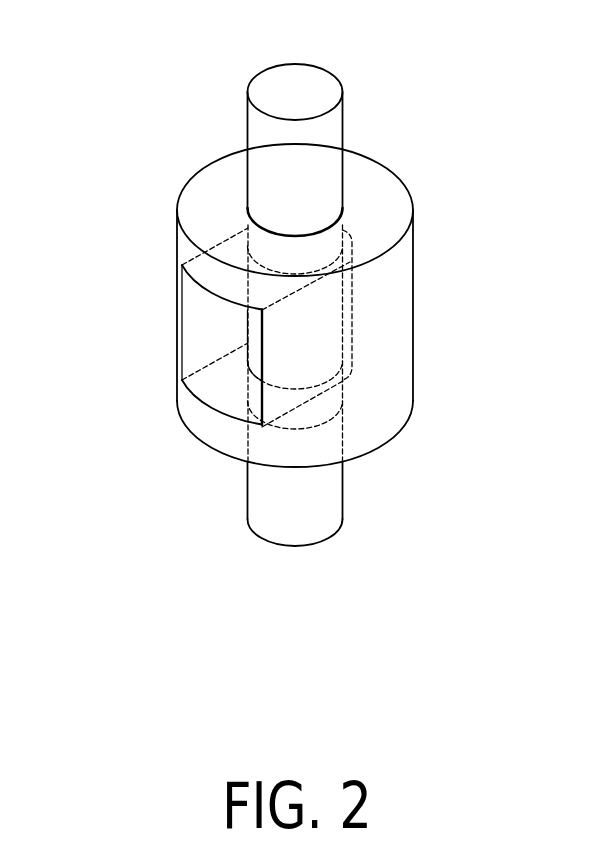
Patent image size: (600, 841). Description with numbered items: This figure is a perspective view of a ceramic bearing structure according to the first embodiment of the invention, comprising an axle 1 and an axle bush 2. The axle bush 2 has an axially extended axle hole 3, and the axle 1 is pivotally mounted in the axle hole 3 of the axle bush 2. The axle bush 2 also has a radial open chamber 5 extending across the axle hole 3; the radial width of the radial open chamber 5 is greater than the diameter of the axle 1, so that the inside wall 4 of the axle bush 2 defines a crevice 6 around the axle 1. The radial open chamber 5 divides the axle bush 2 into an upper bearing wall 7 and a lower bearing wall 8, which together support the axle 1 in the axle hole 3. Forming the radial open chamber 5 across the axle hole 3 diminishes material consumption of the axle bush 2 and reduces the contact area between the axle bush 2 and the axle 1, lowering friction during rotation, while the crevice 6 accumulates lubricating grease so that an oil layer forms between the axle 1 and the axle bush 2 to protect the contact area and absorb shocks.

The axle 1 is at (328, 140).
The axle bush 2 is at (398, 353).
The axle hole 3 is at (247, 208).
The inside wall 4 is at (342, 285).
The radial open chamber 5 is at (220, 380).
The crevice 6 is at (343, 303).
The upper bearing wall 7 is at (248, 237).
The lower bearing wall 8 is at (248, 433).